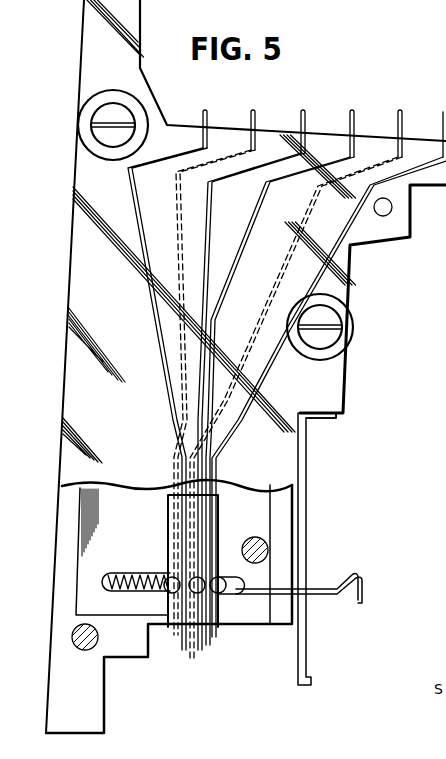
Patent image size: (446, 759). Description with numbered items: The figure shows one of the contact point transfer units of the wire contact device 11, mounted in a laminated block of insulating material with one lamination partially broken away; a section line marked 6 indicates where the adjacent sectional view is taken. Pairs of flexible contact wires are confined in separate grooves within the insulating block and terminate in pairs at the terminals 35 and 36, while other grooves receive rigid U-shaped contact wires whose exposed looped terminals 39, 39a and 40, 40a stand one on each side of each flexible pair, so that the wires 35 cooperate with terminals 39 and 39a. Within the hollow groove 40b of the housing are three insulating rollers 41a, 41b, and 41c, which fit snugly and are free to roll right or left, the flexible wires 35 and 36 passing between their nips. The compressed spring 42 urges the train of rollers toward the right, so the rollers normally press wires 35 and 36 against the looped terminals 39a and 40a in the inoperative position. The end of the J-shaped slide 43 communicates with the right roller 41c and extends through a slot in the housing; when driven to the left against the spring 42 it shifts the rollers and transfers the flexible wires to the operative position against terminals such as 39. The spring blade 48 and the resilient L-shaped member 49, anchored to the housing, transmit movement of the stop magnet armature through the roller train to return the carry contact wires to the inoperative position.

The wire contact device 11 is at (76, 263).
The flexible contact wire pair terminals 35 is at (184, 650).
The flexible contact wire pair terminals 36 is at (208, 645).
The looped contact wire terminal 39 is at (176, 635).
The looped contact wire terminal 39a is at (192, 660).
The looped contact wire terminal 40 is at (200, 650).
The looped contact wire terminal 40a is at (214, 637).
The hollow groove 40b is at (135, 573).
The insulating roller 41a is at (166, 578).
The insulating roller 41b is at (202, 577).
The insulating roller 41c is at (229, 582).
The compressed spring 42 is at (130, 592).
The J-shaped slide 43 is at (332, 591).
The spring blade 48 is at (307, 637).
The resilient L-shaped member 49 is at (316, 420).
The section line 6- 6 is at (28, 612).